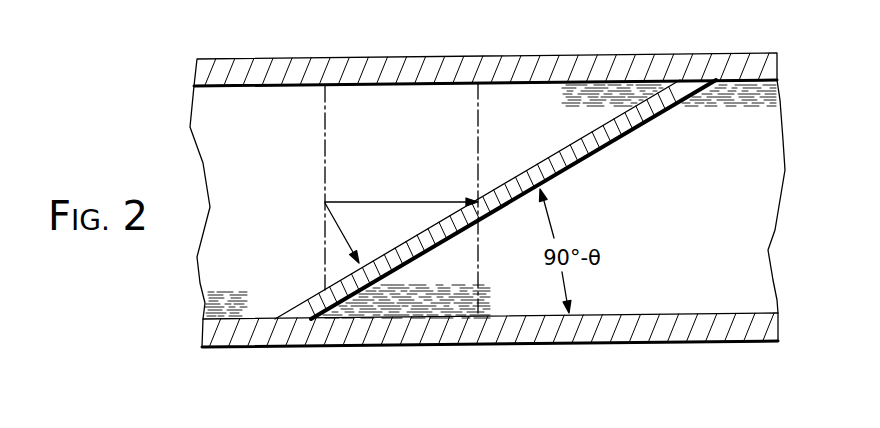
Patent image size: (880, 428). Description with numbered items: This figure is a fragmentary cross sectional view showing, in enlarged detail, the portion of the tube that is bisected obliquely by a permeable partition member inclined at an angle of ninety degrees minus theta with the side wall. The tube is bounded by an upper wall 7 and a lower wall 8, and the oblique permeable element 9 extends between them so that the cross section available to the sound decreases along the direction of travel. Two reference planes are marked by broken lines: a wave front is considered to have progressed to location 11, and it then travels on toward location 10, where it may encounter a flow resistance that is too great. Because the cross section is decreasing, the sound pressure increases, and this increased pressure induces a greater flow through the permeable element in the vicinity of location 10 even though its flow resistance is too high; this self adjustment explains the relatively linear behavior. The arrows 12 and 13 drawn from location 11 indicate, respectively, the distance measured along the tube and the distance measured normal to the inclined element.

The upper wall of duct 7 is at (383, 58).
The lower wall of duct 8 is at (501, 348).
The inclined baffle plate 9 is at (529, 168).
The location 10 is at (477, 131).
The location 11 is at (324, 152).
The axial distance arrow 12 is at (415, 200).
The normal distance arrow 13 is at (343, 227).